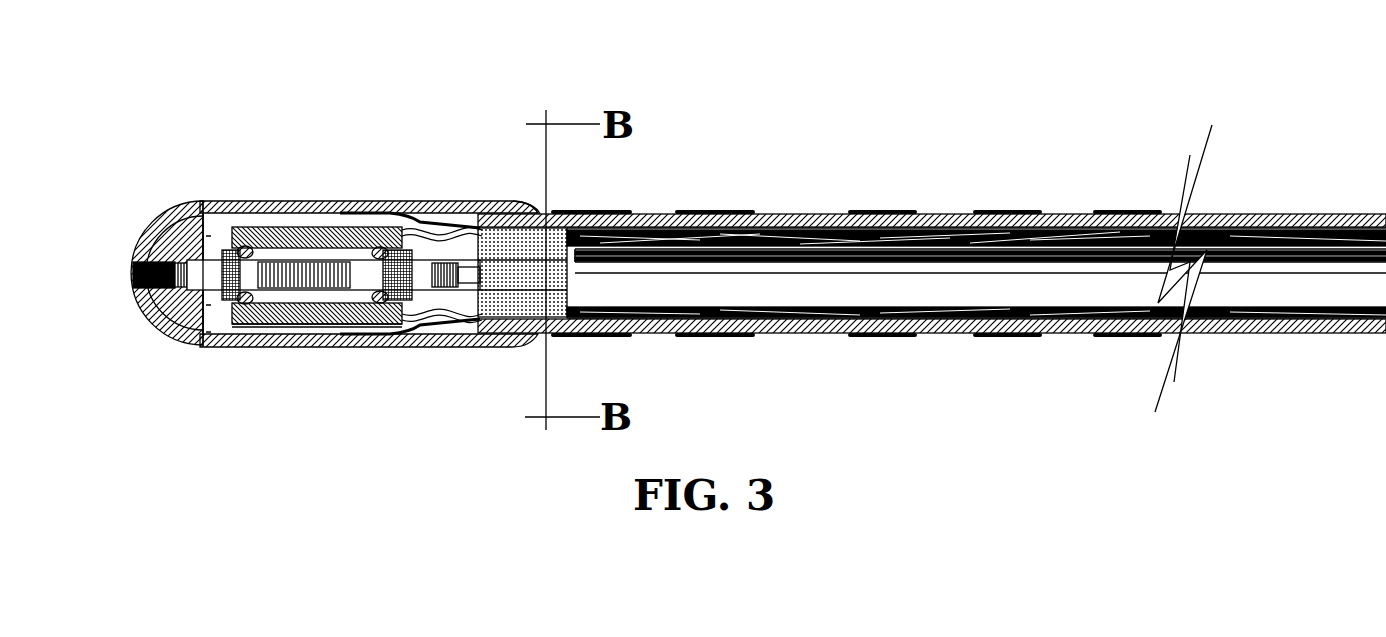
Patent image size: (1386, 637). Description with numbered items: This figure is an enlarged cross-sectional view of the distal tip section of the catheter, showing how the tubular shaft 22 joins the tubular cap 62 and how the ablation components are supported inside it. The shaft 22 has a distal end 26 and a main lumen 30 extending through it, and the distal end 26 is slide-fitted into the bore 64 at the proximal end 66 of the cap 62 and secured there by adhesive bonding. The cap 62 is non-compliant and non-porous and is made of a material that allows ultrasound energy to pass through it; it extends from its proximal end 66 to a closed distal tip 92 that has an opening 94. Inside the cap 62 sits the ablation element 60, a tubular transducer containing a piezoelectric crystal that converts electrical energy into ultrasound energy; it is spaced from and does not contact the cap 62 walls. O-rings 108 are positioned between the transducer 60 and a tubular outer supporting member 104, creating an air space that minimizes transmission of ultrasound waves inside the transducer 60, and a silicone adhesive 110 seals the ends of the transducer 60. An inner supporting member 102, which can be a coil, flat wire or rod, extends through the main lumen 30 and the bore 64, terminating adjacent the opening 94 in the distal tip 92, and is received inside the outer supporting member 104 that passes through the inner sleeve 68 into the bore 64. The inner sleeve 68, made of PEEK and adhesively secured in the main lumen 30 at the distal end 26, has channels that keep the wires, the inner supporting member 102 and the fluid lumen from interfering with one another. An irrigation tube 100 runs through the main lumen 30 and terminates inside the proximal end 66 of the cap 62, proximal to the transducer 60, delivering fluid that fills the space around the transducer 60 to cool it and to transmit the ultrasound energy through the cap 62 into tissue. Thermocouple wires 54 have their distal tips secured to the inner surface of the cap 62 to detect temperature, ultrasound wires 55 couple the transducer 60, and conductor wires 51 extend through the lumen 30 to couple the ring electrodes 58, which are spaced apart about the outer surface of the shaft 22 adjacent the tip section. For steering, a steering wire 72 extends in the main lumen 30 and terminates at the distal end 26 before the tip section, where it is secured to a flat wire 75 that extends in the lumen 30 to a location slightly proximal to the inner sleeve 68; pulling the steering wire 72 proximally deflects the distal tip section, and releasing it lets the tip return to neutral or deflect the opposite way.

The tubular shaft 22 is at (794, 339).
The distal end 26 is at (695, 212).
The main lumen 30 is at (1005, 270).
The conductor wires 51 is at (748, 210).
The thermocouple wires 54 is at (312, 348).
The ultrasound wires 55 is at (416, 221).
The ring electrodes 58 is at (623, 341).
The ablation element 60 is at (244, 323).
The tubular cap 62 is at (204, 199).
The bore 64 is at (257, 330).
The proximal end 66 is at (537, 211).
The inner sleeve 68 is at (520, 300).
The steering wire 72 is at (615, 255).
The flat wire 75 is at (640, 235).
The distal tip 92 is at (159, 240).
The opening 94 is at (140, 282).
The irrigation tube 100 is at (453, 297).
The inner supporting member 102 is at (453, 249).
The outer supporting member 104 is at (363, 283).
The O-rings 108 is at (244, 242).
The silicone adhesive 110 is at (219, 303).